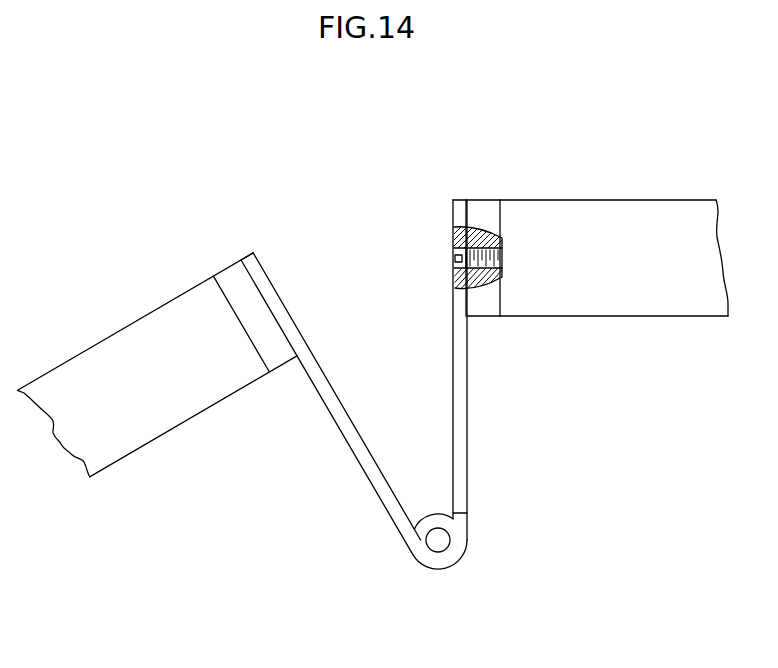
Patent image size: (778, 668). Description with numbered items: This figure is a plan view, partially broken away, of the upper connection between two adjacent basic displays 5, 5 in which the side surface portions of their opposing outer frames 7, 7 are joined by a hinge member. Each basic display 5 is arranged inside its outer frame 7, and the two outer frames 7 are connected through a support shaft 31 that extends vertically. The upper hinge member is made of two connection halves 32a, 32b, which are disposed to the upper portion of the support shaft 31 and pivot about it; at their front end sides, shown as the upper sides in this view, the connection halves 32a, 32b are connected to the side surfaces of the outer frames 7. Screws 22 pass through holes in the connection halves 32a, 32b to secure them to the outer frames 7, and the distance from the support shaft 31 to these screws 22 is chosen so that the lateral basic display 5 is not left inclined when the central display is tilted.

The basic display 5 is at (177, 430).
The outer frame 7 is at (283, 360).
The screw 22 is at (480, 240).
The support shaft 31 is at (441, 546).
The connection half 32a is at (458, 213).
The connection half 32b is at (260, 270).